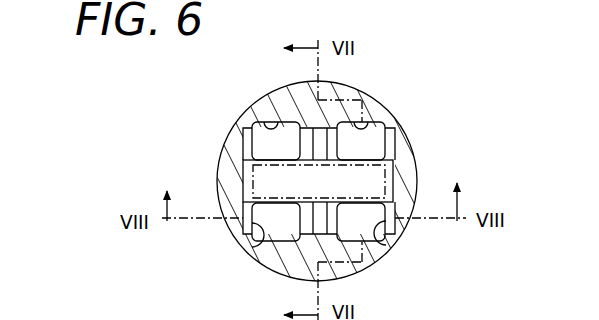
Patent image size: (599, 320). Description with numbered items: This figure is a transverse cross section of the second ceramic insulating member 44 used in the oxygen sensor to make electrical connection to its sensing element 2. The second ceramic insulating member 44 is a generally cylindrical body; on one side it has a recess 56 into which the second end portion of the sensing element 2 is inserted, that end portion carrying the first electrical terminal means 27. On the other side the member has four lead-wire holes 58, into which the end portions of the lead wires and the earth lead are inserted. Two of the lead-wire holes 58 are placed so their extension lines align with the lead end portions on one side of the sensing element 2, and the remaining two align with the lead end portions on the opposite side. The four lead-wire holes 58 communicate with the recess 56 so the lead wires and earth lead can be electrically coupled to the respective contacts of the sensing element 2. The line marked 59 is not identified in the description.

The second ceramic insulating member 44 is at (419, 129).
The lead-wire holes 58 is at (270, 127).
The sensing element 2 is at (393, 183).
The recess 56 is at (248, 182).
The first electrical terminal means 27 is at (354, 157).
The axis line 59 is at (283, 208).